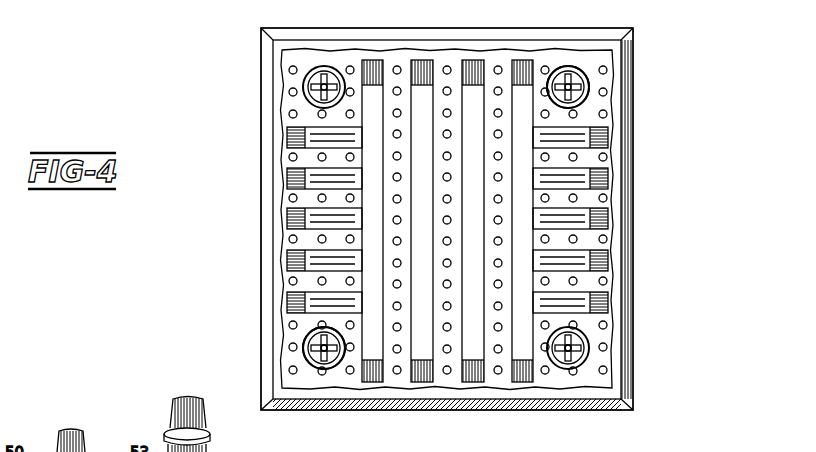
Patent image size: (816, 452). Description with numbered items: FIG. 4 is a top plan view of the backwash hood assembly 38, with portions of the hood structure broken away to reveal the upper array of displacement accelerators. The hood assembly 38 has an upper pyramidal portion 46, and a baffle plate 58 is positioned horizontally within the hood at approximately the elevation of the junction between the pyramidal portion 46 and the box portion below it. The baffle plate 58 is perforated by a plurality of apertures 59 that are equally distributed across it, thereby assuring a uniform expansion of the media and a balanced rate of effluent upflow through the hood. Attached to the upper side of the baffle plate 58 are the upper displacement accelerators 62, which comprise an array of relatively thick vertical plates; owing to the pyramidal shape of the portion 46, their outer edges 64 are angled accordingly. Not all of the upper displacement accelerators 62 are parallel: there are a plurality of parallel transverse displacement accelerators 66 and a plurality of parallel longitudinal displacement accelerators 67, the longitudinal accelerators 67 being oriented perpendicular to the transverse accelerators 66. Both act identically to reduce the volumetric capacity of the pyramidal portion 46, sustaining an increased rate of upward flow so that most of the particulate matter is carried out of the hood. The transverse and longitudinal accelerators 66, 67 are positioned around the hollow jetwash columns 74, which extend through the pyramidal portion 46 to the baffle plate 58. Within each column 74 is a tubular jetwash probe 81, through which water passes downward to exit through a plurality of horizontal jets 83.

The hood assembly 38 is at (640, 230).
The pyramidal portion 46 is at (622, 106).
The baffle plate 58 is at (575, 62).
The apertures 59 is at (296, 66).
The upper displacement accelerators 62 is at (490, 80).
The outer edges 64 is at (600, 262).
The transverse displacement accelerators 66 is at (423, 355).
The longitudinal displacement accelerators 67 is at (320, 228).
The jetwash columns 74 is at (591, 84).
The jetwash probe 81 is at (330, 84).
The horizontal jets 83 is at (590, 340).